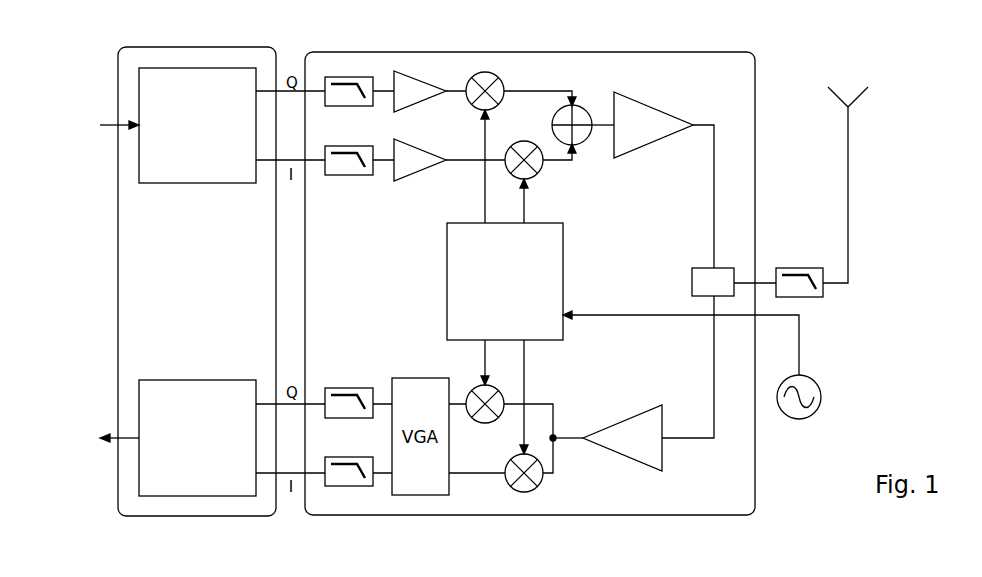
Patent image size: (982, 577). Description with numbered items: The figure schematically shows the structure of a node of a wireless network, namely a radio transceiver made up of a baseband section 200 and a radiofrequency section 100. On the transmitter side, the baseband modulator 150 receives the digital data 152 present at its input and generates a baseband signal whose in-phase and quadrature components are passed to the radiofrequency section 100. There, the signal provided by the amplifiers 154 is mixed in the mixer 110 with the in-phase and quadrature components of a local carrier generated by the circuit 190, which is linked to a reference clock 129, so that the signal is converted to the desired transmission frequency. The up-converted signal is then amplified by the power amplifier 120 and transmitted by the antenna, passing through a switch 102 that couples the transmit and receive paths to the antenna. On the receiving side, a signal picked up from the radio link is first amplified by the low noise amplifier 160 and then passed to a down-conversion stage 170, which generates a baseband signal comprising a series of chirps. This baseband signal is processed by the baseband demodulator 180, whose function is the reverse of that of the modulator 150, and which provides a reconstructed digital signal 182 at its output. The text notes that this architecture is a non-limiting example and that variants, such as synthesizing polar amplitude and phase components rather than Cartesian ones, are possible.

The radiofrequency section 100 is at (756, 228).
The antenna switch 102 is at (692, 267).
The mixer 110 is at (490, 70).
The power amplifier 120 is at (675, 114).
The reference clock 129 is at (797, 422).
The baseband modulator 150 is at (240, 66).
The digital data 152 is at (75, 113).
The amplifiers 154 is at (412, 68).
The low noise amplifier 160 is at (664, 452).
The down-conversion stage 170 is at (515, 492).
The baseband demodulator 180 is at (240, 497).
The reconstructed digital signal 182 is at (76, 455).
The circuit 190 is at (445, 234).
The baseband section 200 is at (118, 263).